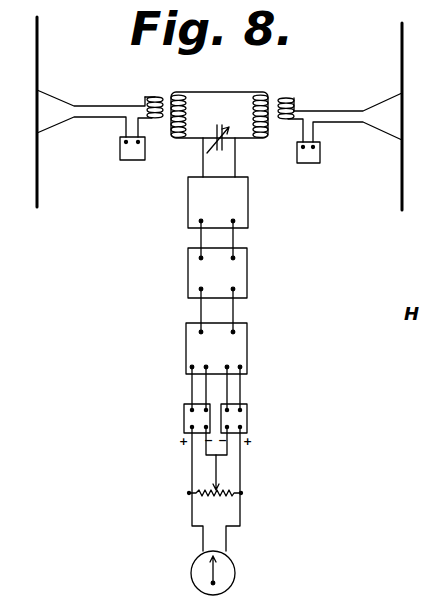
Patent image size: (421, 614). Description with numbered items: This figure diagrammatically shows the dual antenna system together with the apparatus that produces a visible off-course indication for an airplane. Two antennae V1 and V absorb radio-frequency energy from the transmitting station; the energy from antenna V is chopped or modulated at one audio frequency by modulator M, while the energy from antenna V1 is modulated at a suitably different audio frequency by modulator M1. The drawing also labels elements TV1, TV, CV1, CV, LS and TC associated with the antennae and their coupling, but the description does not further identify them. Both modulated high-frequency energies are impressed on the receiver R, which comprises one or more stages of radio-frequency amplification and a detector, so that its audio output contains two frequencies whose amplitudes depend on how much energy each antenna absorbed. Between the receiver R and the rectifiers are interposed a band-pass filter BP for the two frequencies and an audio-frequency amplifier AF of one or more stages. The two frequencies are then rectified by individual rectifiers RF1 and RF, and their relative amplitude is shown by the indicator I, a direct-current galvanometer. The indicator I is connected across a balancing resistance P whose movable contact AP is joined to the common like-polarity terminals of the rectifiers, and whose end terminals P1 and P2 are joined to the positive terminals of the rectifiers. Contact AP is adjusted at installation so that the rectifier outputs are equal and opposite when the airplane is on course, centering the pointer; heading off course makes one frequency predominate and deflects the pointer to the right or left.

The antenna V1 is at (38, 42).
The antenna V is at (420, 60).
The first tapered transmission conductor TV1 is at (55, 100).
The second tapered transmission conductor TV is at (385, 104).
The first coupling coil CV1 is at (147, 96).
The second coupling coil CV is at (295, 99).
The modulator M1 is at (132, 149).
The modulator M is at (308, 152).
The loop coil LS is at (188, 110).
The tuning condenser TC is at (212, 128).
The receiver R is at (250, 210).
The band-pass filter BP is at (245, 270).
The audio-frequency amplifier AF is at (242, 360).
The rectifier RF1 is at (185, 418).
The rectifier RF is at (242, 418).
The movable contact AP is at (222, 485).
The balancing resistance P is at (224, 497).
The terminal of balancing resistance P1 is at (188, 493).
The terminal of balancing resistance P2 is at (242, 493).
The indicator I is at (236, 573).